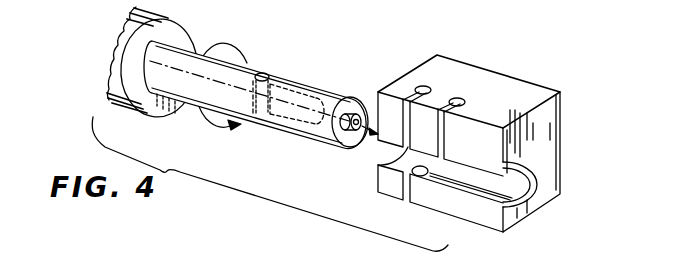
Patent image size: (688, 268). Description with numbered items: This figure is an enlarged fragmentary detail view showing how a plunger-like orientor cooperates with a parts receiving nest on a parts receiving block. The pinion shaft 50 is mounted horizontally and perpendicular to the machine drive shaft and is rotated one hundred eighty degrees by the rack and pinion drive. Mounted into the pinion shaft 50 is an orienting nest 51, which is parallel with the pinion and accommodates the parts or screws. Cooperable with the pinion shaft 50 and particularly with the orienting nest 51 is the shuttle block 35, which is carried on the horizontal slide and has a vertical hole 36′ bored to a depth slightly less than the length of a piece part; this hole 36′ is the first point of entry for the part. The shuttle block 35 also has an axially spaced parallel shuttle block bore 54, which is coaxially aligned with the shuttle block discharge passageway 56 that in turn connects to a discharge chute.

The pinion shaft 50 is at (200, 54).
The orienting nest 51 is at (266, 74).
The shuttle block bore 54 is at (423, 92).
The vertical hole 36' is at (501, 79).
The shuttle block 35 is at (538, 90).
The shuttle block discharge passageway 56 is at (421, 177).